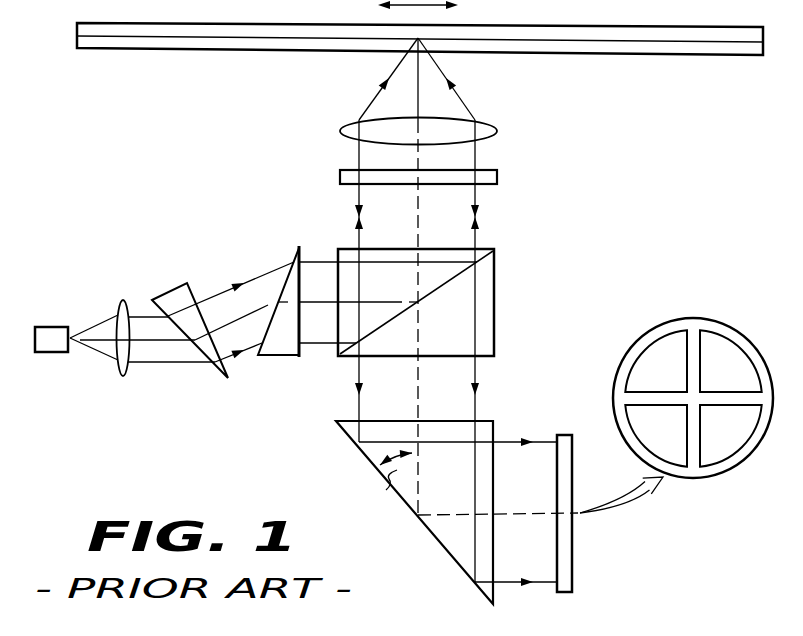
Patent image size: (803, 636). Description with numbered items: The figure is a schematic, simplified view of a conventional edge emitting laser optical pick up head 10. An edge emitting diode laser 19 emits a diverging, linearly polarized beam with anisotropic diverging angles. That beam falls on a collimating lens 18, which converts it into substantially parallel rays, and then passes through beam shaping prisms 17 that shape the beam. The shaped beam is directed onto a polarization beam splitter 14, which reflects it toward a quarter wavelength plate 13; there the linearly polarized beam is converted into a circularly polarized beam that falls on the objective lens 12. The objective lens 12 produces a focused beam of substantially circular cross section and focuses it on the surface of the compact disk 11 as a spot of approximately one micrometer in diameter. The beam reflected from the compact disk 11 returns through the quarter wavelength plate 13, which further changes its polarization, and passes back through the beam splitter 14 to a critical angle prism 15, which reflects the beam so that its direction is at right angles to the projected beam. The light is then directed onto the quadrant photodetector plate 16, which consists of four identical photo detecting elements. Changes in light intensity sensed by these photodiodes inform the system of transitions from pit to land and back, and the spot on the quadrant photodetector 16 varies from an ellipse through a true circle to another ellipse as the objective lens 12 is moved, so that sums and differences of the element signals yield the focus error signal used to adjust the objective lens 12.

The edge emitting laser optical pick up head 10 is at (204, 486).
The compact disk 11 is at (77, 27).
The objective lens 12 is at (340, 128).
The quarter wavelength plate 13 is at (340, 173).
The polarization beam splitter 14 is at (494, 305).
The critical angle prism 15 is at (446, 420).
The quadrant photodetector plate 16 is at (566, 435).
The beam shaping prisms 17 is at (173, 286).
The collimating lens 18 is at (123, 377).
The edge emitting diode laser 19 is at (51, 352).